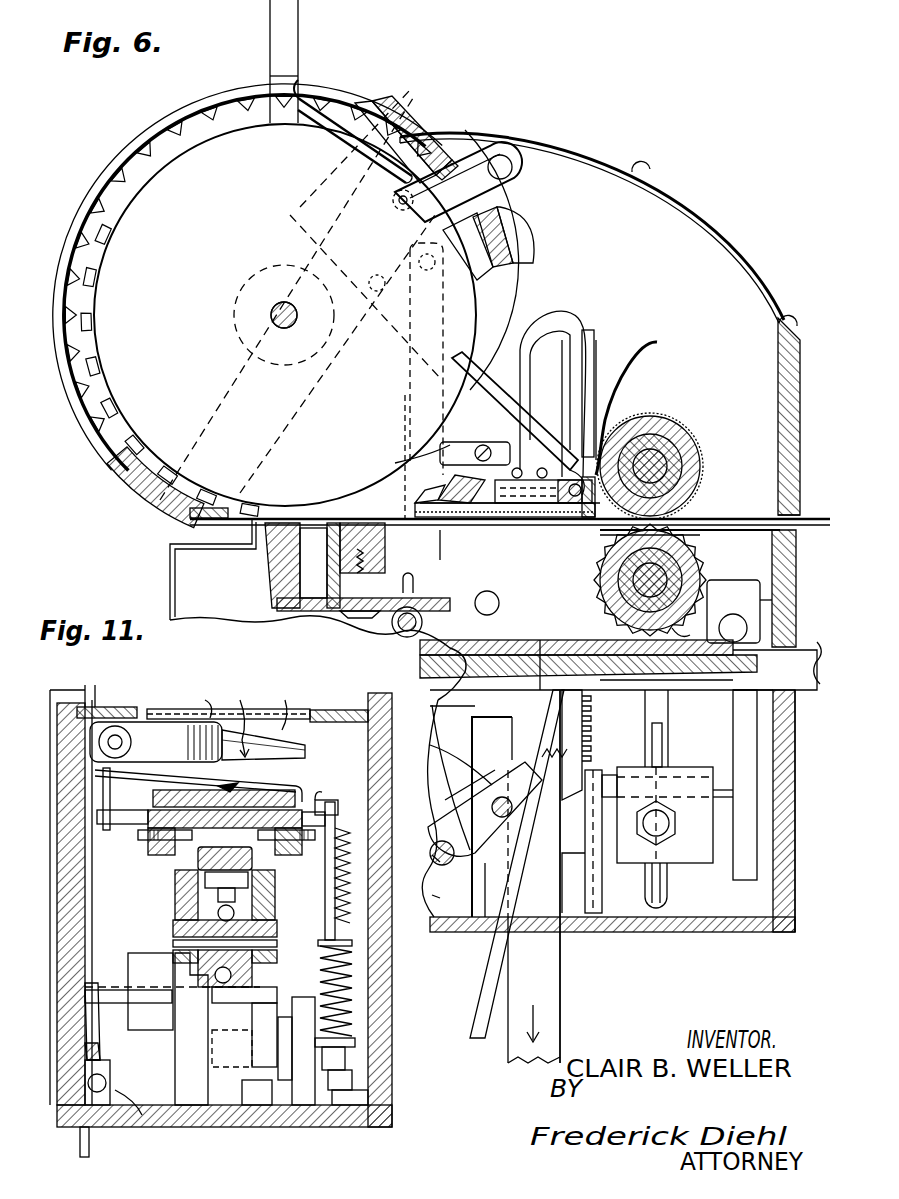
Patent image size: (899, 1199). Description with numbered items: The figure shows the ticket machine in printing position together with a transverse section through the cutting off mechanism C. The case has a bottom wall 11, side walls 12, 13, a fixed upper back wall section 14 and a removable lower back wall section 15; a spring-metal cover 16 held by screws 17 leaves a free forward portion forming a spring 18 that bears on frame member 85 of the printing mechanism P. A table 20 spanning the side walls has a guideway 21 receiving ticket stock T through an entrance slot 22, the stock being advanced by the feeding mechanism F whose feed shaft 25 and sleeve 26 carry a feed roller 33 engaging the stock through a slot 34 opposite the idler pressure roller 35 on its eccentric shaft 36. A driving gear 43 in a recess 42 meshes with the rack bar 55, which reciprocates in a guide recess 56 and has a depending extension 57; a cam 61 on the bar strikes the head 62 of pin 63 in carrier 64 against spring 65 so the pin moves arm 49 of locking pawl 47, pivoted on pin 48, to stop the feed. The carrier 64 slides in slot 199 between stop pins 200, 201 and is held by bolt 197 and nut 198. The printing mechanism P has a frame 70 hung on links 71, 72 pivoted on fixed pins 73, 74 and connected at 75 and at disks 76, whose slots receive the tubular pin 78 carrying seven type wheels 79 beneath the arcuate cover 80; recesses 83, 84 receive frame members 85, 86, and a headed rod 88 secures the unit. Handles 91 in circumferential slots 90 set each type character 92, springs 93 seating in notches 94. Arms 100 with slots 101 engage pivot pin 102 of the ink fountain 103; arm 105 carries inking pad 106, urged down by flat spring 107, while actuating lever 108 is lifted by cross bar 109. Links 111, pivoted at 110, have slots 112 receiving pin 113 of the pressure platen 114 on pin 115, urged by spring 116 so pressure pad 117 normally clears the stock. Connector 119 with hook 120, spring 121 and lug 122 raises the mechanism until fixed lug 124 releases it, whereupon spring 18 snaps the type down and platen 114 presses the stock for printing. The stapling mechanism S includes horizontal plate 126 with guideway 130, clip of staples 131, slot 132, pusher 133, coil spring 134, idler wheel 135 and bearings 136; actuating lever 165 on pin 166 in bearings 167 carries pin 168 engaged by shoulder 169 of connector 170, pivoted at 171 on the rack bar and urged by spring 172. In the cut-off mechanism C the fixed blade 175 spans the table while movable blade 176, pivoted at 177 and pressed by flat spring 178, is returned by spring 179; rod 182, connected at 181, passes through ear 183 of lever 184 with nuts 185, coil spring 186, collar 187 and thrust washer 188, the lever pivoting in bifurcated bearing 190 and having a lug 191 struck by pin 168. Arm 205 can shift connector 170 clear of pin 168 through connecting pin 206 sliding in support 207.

In FIG. 6, the bottom wall 11 is at (678, 930).
In FIG. 11, the bottom wall 11 is at (378, 1122).
In FIG. 6, the side wall 12 is at (445, 924).
In FIG. 11, the side wall 12 is at (393, 1005).
In FIG. 6, the side wall 13 is at (700, 240).
In FIG. 11, the side wall 13 is at (70, 1070).
In FIG. 6, the fixed upper back wall section 14 is at (792, 410).
In FIG. 6, the removable lower back wall section 15 is at (786, 940).
In FIG. 6, the cover 16 is at (750, 262).
In FIG. 6, the screws 17 is at (650, 178).
In FIG. 6, the spring 18 is at (550, 142).
In FIG. 6, the table 20 is at (710, 518).
In FIG. 11, the table 20 is at (104, 700).
In FIG. 6, the guideway 21 is at (735, 517).
In FIG. 6, the entrance slot 22 is at (775, 520).
In FIG. 6, the feed shaft 25 is at (680, 572).
In FIG. 6, the sleeve 26 is at (660, 580).
In FIG. 6, the feed roller 33 is at (690, 548).
In FIG. 6, the slot 34 is at (690, 518).
In FIG. 6, the idler pressure roller 35 is at (690, 440).
In FIG. 6, the shaft 36 is at (670, 425).
In FIG. 6, the recess 42 is at (690, 632).
In FIG. 6, the driving gear 43 is at (720, 620).
In FIG. 6, the locking pawl 47 is at (733, 611).
In FIG. 6, the pin 48 is at (745, 628).
In FIG. 6, the arm 49 is at (740, 880).
In FIG. 6, the rack bar 55 is at (525, 553).
In FIG. 6, the guide recess 56 is at (598, 370).
In FIG. 6, the depending extension 57 is at (553, 995).
In FIG. 11, the depending extension 57 is at (78, 1143).
In FIG. 6, the cam 61 is at (583, 702).
In FIG. 6, the head 62 is at (596, 825).
In FIG. 6, the pin 63 is at (718, 785).
In FIG. 6, the carrier 64 is at (632, 862).
In FIG. 11, the carrier 64 is at (115, 1040).
In FIG. 6, the spring 65 is at (598, 770).
In FIG. 6, the rectangular frame 70 is at (445, 160).
In FIG. 6, the links 71 is at (475, 162).
In FIG. 6, the links 72 is at (478, 280).
In FIG. 6, the fixed pin 73 is at (505, 160).
In FIG. 6, the fixed pin 74 is at (370, 312).
In FIG. 6, the pivotal connection 75 is at (392, 202).
In FIG. 6, the disks 76 is at (245, 272).
In FIG. 6, the tubular pin 78 is at (272, 310).
In FIG. 6, the type wheels 79 is at (230, 140).
In FIG. 6, the arcuate cover 80 is at (180, 118).
In FIG. 6, the recess 83 is at (392, 105).
In FIG. 6, the recess 84 is at (128, 490).
In FIG. 6, the frame member 85 is at (440, 150).
In FIG. 6, the frame member 86 is at (158, 505).
In FIG. 6, the headed rod 88 is at (272, 318).
In FIG. 6, the circumferential slots 90 is at (312, 88).
In FIG. 6, the actuating handles 91 is at (300, 20).
In FIG. 6, the type character 92 is at (122, 440).
In FIG. 6, the springs 93 is at (338, 115).
In FIG. 6, the notches 94 is at (110, 165).
In FIG. 6, the arms 100 is at (470, 375).
In FIG. 6, the longitudinal slots 101 is at (498, 442).
In FIG. 6, the pivot pin 102 is at (570, 525).
In FIG. 6, the ink fountain 103 is at (420, 505).
In FIG. 6, the arm 105 is at (490, 515).
In FIG. 6, the inking pad 106 is at (420, 485).
In FIG. 6, the flat spring 107 is at (625, 428).
In FIG. 6, the actuating lever 108 is at (640, 350).
In FIG. 6, the cross bar 109 is at (505, 268).
In FIG. 6, the pivotal connection 110 is at (486, 212).
In FIG. 6, the links 111 is at (400, 395).
In FIG. 11, the links 111 is at (88, 690).
In FIG. 6, the longitudinal slots 112 is at (415, 585).
In FIG. 6, the pin 113 is at (422, 624).
In FIG. 11, the pin 113 is at (125, 824).
In FIG. 6, the pressure platen 114 is at (277, 604).
In FIG. 6, the pin 115 is at (500, 603).
In FIG. 6, the spring 116 is at (345, 611).
In FIG. 6, the pressure pad 117 is at (275, 560).
In FIG. 6, the connector 119 is at (570, 320).
In FIG. 6, the hook 120 is at (521, 345).
In FIG. 6, the spring 121 is at (595, 328).
In FIG. 6, the lug 122 is at (528, 220).
In FIG. 6, the fixed lug 124 is at (430, 470).
In FIG. 6, the horizontal plate 126 is at (775, 670).
In FIG. 11, the horizontal plate 126 is at (275, 866).
In FIG. 6, the longitudinal guideway 130 is at (432, 662).
In FIG. 11, the longitudinal guideway 130 is at (200, 858).
In FIG. 11, the clip of staples 131 is at (235, 875).
In FIG. 6, the slot 132 is at (810, 686).
In FIG. 11, the pusher 133 is at (245, 905).
In FIG. 11, the coil spring 134 is at (240, 972).
In FIG. 11, the grooved idler wheel 135 is at (190, 920).
In FIG. 11, the bearings 136 is at (178, 933).
In FIG. 6, the actuating lever 165 is at (430, 777).
In FIG. 11, the actuating lever 165 is at (215, 1122).
In FIG. 6, the pin 166 is at (517, 864).
In FIG. 6, the bearings 167 is at (460, 740).
In FIG. 6, the pin 168 is at (495, 828).
In FIG. 11, the pin 168 is at (120, 990).
In FIG. 6, the shoulder 169 is at (441, 750).
In FIG. 6, the connector 170 is at (462, 712).
In FIG. 11, the connector 170 is at (110, 800).
In FIG. 6, the pivot 171 is at (553, 650).
In FIG. 6, the spring 172 is at (497, 790).
In FIG. 6, the fixed blade 175 is at (413, 545).
In FIG. 11, the fixed blade 175 is at (280, 700).
In FIG. 6, the movable cutting blade 176 is at (330, 550).
In FIG. 11, the movable cutting blade 176 is at (317, 770).
In FIG. 11, the pivot 177 is at (116, 728).
In FIG. 11, the flat spring 178 is at (168, 740).
In FIG. 6, the spring 179 is at (414, 897).
In FIG. 11, the spring 179 is at (380, 871).
In FIG. 6, the connection 181 is at (448, 792).
In FIG. 11, the connection 181 is at (340, 805).
In FIG. 6, the rod 182 is at (414, 861).
In FIG. 11, the rod 182 is at (350, 860).
In FIG. 11, the ear 183 is at (345, 1055).
In FIG. 11, the actuating lever 184 is at (305, 1120).
In FIG. 11, the nuts 185 is at (352, 1075).
In FIG. 11, the coil spring 186 is at (352, 990).
In FIG. 11, the collar 187 is at (352, 943).
In FIG. 11, the thrust washer 188 is at (355, 1042).
In FIG. 11, the bifurcated bearing 190 is at (368, 1100).
In FIG. 11, the lug 191 is at (235, 1068).
In FIG. 6, the bolt 197 is at (660, 805).
In FIG. 6, the nut 198 is at (668, 848).
In FIG. 6, the slot 199 is at (665, 738).
In FIG. 6, the stop pin 200 is at (655, 710).
In FIG. 6, the stop pin 201 is at (672, 902).
In FIG. 11, the arm 205 is at (108, 1060).
In FIG. 11, the connecting pin 206 is at (97, 1092).
In FIG. 11, the support 207 is at (130, 1105).
In FIG. 6, the printing mechanism P is at (134, 146).
In FIG. 6, the cut-off mechanism C is at (330, 580).
In FIG. 11, the cut-off mechanism C is at (233, 729).
In FIG. 6, the stapling mechanism S is at (418, 660).
In FIG. 6, the ticket stock T is at (810, 545).
In FIG. 11, the ticket stock T is at (212, 682).
In FIG. 6, the feeding mechanism F is at (690, 540).